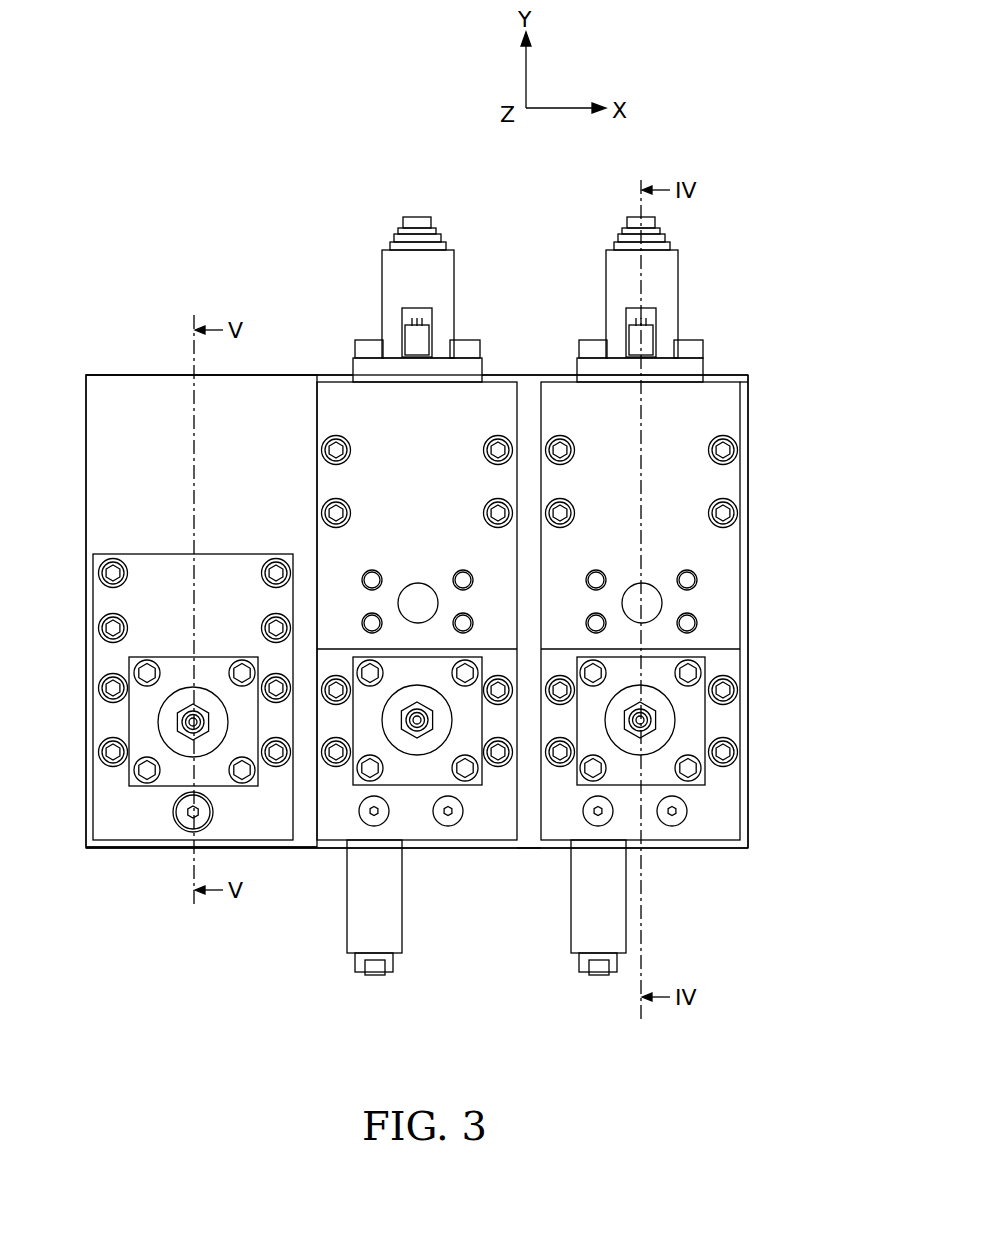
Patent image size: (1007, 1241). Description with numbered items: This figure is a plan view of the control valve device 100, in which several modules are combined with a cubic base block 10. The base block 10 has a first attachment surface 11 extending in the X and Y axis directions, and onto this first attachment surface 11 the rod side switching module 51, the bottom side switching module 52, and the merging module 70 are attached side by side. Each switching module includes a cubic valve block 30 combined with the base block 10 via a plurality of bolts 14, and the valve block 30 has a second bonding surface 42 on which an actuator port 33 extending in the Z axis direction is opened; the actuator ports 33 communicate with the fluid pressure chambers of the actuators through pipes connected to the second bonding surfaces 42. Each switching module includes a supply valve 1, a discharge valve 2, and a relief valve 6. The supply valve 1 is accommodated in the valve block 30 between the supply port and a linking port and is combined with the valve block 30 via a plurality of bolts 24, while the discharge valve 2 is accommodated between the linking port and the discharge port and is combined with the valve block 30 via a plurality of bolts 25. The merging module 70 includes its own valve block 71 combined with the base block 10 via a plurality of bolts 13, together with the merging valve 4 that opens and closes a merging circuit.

The control valve device 100 is at (716, 188).
The supply valve 1 is at (482, 785).
The discharge valve 2 is at (455, 290).
The merging valve 4 is at (233, 787).
The relief valve 6 is at (402, 870).
The base block 10 is at (110, 375).
The first attachment surface 11 is at (526, 850).
The bolts 13 is at (111, 753).
The bolts 14 is at (336, 755).
The bolts 24 is at (242, 772).
The bolts 25 is at (367, 340).
The valve block 30 is at (492, 380).
The actuator port 33 is at (428, 612).
The second bonding surface 42 is at (445, 568).
The rod side switching module 51 is at (750, 374).
The bottom side switching module 52 is at (521, 374).
The merging module 70 is at (89, 849).
The valve block 71 is at (127, 842).